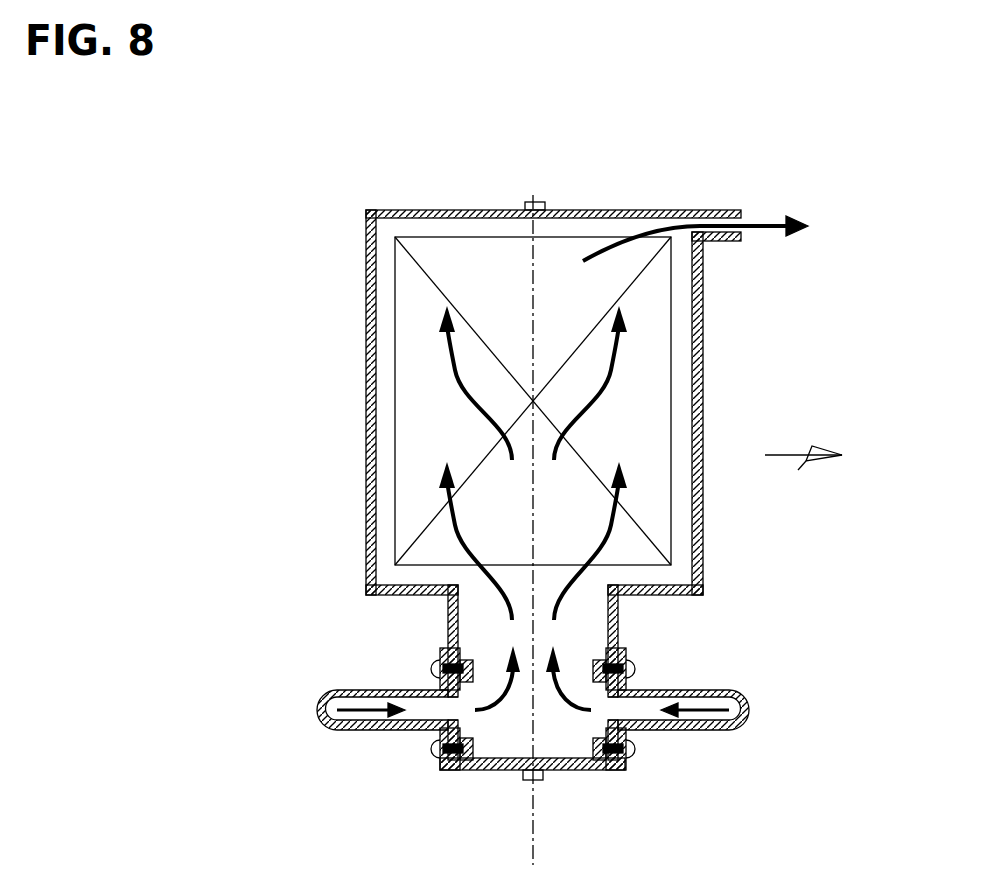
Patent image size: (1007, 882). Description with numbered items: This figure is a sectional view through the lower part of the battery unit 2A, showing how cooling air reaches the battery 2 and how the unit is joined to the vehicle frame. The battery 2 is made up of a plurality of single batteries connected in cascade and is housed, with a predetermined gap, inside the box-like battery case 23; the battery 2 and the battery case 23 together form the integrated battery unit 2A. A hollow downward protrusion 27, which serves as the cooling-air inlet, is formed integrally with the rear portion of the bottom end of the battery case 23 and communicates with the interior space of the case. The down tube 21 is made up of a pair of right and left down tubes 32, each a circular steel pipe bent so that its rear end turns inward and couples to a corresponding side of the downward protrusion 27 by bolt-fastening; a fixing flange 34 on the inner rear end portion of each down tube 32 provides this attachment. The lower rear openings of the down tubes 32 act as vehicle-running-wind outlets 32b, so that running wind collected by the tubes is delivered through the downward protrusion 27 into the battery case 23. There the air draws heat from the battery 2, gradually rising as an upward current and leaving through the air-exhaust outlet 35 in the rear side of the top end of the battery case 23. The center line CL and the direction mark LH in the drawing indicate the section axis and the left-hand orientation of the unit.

The battery unit 2A is at (670, 205).
The battery 2 is at (662, 312).
The battery case 23 is at (700, 388).
The air-exhaust outlet 35 is at (745, 218).
The down tubes 32 is at (343, 690).
The down tube 21 is at (552, 666).
The vehicle-running-wind outlets 32b is at (438, 702).
The fixing flange 34 is at (440, 762).
The downward protrusion 27 is at (585, 772).
The center line CL is at (535, 128).
The left-hand direction LH is at (823, 455).